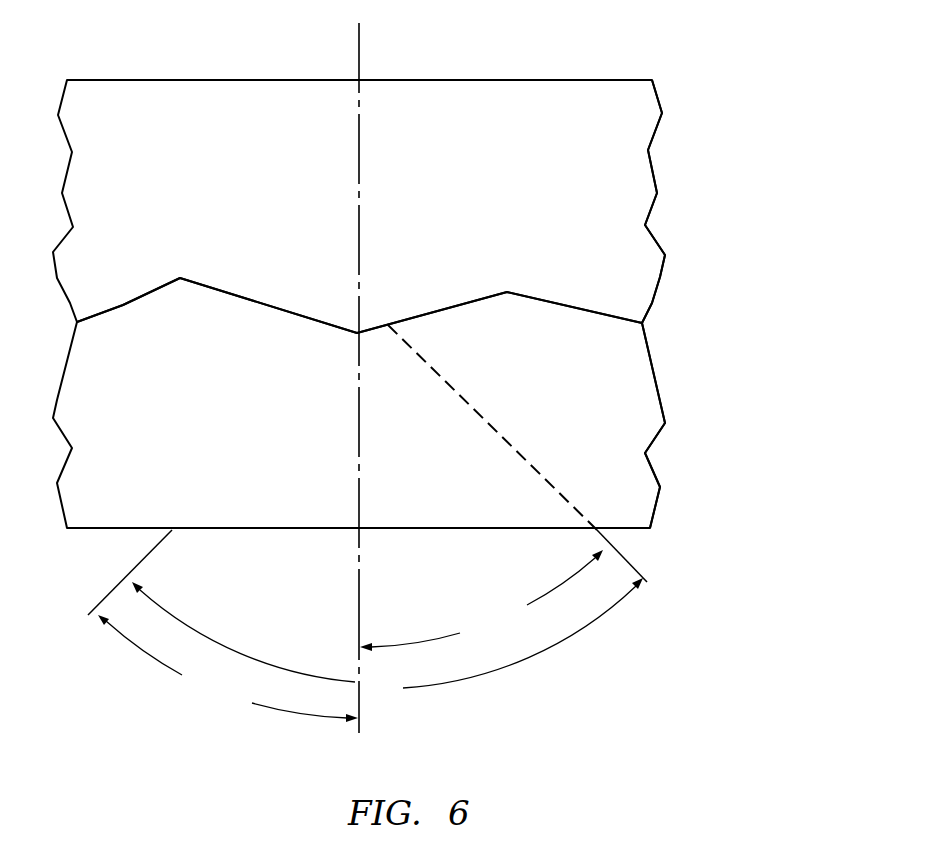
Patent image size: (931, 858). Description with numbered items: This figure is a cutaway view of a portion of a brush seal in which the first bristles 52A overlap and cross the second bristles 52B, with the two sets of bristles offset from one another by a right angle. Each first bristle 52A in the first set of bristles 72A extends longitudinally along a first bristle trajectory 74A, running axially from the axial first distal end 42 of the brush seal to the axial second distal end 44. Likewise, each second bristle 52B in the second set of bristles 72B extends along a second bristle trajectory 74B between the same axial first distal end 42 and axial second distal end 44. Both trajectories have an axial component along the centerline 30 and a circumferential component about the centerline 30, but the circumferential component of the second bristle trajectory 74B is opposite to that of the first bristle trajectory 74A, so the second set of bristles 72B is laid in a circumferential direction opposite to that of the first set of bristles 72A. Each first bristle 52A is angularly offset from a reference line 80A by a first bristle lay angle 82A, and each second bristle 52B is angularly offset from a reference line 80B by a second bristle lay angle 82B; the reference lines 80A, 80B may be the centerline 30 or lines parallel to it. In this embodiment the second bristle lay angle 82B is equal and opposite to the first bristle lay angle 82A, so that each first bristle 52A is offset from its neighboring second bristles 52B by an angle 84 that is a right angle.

The centerline 30 is at (362, 29).
The axial first distal end 42 is at (112, 80).
The axial second distal end 44 is at (70, 530).
The first bristles 52A is at (203, 137).
The second bristles 52B is at (195, 510).
The first set of bristles 72A is at (662, 102).
The second set of bristles 72B is at (660, 463).
The first bristle trajectory 74A is at (502, 453).
The second bristle trajectory 74B is at (225, 478).
The reference line 80A is at (362, 725).
The reference line 80B is at (446, 723).
The first bristle lay angle 82A is at (481, 600).
The second bristle lay angle 82B is at (228, 668).
The angle 84 is at (387, 638).